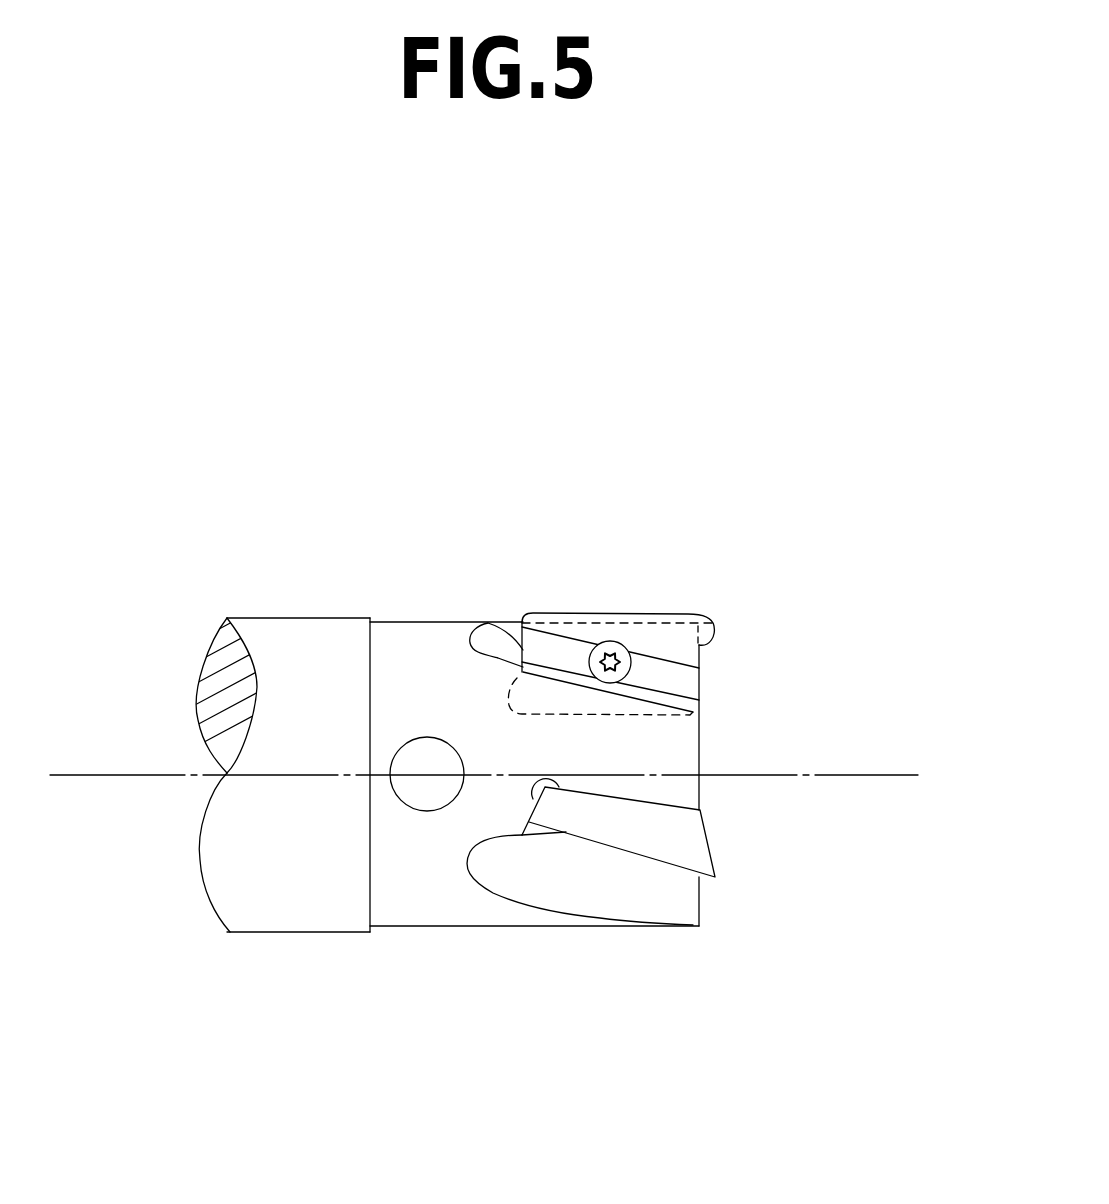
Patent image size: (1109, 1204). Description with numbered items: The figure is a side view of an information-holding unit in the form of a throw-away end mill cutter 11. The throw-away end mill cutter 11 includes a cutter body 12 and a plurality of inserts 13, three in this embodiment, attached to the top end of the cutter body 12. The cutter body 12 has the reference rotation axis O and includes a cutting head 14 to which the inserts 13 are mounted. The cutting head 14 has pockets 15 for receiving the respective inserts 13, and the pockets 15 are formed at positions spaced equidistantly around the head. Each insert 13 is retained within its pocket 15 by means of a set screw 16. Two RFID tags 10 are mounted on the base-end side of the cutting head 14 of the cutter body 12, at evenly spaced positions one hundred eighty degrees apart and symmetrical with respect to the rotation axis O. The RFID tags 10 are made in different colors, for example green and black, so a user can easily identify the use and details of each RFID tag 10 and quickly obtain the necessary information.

The RFID tag 10 is at (423, 760).
The throw-away end mill cutter 11 is at (668, 388).
The cutter body 12 is at (293, 637).
The insert 13 is at (703, 617).
The cutting head 14 is at (508, 915).
The pocket 15 is at (494, 623).
The set screw 16 is at (613, 653).